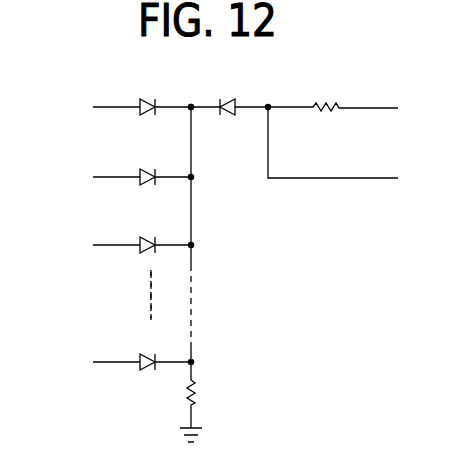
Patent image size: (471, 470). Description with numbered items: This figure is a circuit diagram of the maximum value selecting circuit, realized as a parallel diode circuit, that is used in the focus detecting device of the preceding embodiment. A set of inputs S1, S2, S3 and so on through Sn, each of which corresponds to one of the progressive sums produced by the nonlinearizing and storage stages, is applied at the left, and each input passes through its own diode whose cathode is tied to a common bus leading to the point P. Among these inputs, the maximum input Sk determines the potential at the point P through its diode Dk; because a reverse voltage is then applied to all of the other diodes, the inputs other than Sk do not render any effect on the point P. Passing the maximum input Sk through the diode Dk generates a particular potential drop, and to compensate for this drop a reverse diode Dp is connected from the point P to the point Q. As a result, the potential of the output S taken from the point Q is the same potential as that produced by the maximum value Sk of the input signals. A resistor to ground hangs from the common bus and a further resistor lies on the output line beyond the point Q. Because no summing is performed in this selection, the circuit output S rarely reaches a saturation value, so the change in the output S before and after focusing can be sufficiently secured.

The input S1 is at (123, 106).
The input S2 is at (123, 176).
The input S3 is at (123, 244).
The maximum input Sk is at (103, 299).
The diode Dk is at (133, 300).
The input Sn is at (123, 361).
The point P is at (189, 94).
The reverse diode Dp is at (229, 91).
The point Q is at (327, 96).
The output S is at (333, 143).